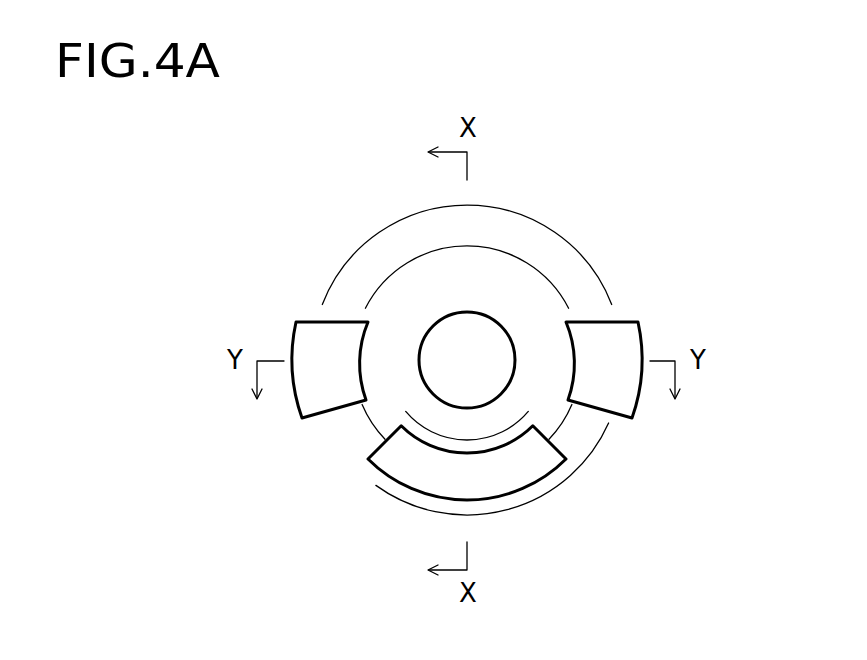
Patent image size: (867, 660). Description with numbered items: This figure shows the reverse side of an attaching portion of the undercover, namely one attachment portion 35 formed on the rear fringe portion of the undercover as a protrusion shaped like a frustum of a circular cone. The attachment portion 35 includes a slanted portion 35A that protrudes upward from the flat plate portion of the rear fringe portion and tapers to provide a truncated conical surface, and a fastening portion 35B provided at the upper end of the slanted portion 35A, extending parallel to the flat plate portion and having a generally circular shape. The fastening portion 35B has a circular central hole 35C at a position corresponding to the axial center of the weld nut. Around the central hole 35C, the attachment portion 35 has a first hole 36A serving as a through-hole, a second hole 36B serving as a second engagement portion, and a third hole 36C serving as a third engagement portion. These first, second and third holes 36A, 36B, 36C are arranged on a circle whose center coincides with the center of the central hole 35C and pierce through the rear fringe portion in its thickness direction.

The attachment portion 35 is at (542, 210).
The slanted portion 35A is at (487, 233).
The fastening portion 35B is at (415, 300).
The central hole 35C is at (474, 314).
The first hole 36A is at (558, 451).
The second hole 36B is at (613, 409).
The third hole 36C is at (321, 409).